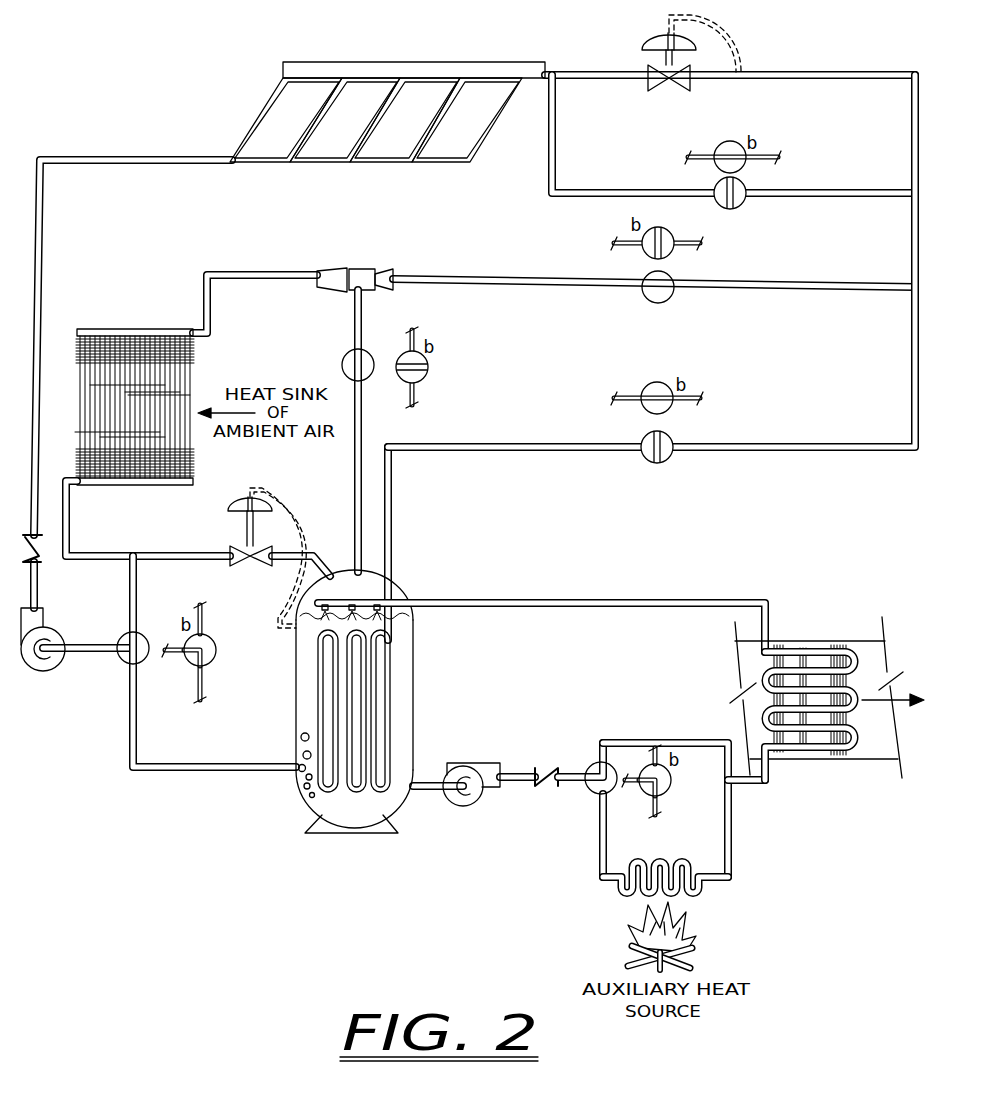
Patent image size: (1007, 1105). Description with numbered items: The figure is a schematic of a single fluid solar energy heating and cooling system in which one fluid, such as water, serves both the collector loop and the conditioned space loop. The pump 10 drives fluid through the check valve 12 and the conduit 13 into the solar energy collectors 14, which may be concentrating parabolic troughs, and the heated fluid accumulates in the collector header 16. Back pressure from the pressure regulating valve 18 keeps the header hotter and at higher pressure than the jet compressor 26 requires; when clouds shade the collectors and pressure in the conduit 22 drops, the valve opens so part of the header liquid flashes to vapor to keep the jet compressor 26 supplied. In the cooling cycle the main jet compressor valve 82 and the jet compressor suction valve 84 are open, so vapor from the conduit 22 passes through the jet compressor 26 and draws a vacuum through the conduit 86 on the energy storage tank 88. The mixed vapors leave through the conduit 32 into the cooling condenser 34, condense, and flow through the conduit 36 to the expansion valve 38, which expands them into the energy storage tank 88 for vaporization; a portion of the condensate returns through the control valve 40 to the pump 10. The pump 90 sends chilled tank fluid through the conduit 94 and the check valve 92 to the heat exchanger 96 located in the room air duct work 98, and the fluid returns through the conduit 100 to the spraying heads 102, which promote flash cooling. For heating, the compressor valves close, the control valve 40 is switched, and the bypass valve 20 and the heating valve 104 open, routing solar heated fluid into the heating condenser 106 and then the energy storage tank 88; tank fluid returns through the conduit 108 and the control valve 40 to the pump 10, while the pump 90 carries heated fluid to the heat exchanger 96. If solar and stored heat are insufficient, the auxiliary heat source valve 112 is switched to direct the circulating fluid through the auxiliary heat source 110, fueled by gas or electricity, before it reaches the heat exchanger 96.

The pump 10 is at (43, 672).
The check valve 12 is at (40, 553).
The conduit 13 is at (43, 213).
The solar energy collectors 14 is at (240, 109).
The collector header 16 is at (535, 62).
The pressure regulating valve 18 is at (648, 72).
The bypass valve 20 is at (740, 208).
The conduit 22 is at (910, 367).
The jet compressor 26 is at (367, 292).
The conduit 32 is at (235, 270).
The cooling condenser 34 is at (147, 487).
The conduit 36 is at (70, 527).
The expansion valve 38 is at (228, 550).
The control valve 40 is at (121, 660).
The main jet compressor valve 82 is at (658, 304).
The jet compressor suction valve 84 is at (341, 362).
The conduit 86 is at (354, 480).
The energy storage tank 88 is at (414, 723).
The pump 90 is at (484, 800).
The check valve 92 is at (550, 787).
The conduit 94 is at (752, 784).
The heat exchanger 96 is at (857, 735).
The room air duct work 98 is at (832, 641).
The conduit 100 is at (560, 600).
The spraying heads 102 is at (341, 592).
The heating valve 104 is at (657, 464).
The heating condenser 106 is at (300, 706).
The conduit 108 is at (200, 768).
The auxiliary heat source 110 is at (678, 863).
The auxiliary heat source valve 112 is at (590, 766).